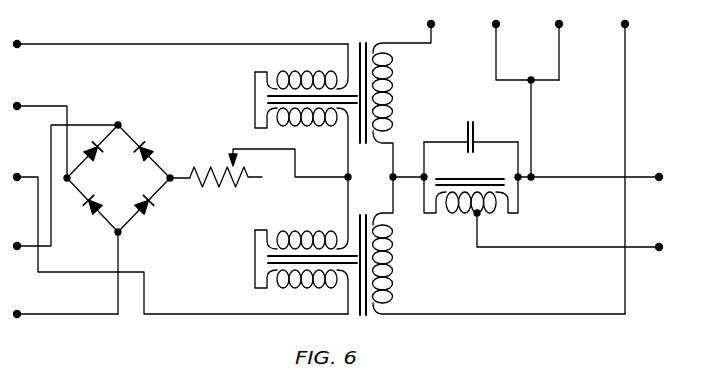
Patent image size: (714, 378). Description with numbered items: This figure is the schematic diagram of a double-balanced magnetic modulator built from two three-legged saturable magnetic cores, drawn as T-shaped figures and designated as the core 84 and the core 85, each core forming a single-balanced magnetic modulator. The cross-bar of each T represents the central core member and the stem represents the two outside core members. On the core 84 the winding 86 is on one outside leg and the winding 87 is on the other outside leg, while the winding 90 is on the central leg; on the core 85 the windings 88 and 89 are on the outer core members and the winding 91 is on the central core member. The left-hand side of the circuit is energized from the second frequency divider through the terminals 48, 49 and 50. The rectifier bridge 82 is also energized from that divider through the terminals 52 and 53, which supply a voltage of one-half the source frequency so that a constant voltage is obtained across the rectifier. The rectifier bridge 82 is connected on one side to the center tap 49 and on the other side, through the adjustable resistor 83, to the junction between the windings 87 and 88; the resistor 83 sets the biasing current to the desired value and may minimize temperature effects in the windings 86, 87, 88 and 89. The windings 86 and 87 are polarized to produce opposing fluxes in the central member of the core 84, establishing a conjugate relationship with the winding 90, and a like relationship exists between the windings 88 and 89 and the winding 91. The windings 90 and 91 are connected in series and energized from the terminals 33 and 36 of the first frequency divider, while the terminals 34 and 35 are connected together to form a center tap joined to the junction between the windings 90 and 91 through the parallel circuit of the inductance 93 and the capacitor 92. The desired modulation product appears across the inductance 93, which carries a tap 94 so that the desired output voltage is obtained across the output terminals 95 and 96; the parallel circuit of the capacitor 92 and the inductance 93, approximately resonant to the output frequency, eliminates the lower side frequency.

The terminal 33 is at (434, 22).
The terminal 34 is at (499, 22).
The terminal 35 is at (562, 22).
The terminal 36 is at (628, 22).
The terminal 48 is at (19, 47).
The center tap terminal 49 is at (18, 110).
The terminal 50 is at (17, 181).
The terminal 52 is at (21, 248).
The terminal 53 is at (18, 318).
The rectifier bridge 82 is at (152, 139).
The adjustable resistor 83 is at (236, 188).
The saturable magnetic core 84 is at (364, 35).
The saturable magnetic core 85 is at (362, 319).
The winding 86 is at (313, 65).
The winding 87 is at (321, 133).
The winding 88 is at (302, 222).
The winding 89 is at (307, 293).
The winding 90 is at (394, 80).
The winding 91 is at (394, 276).
The capacitor 92 is at (480, 112).
The inductance 93 is at (506, 172).
The tap 94 is at (471, 220).
The output terminal 95 is at (666, 187).
The output terminal 96 is at (666, 255).